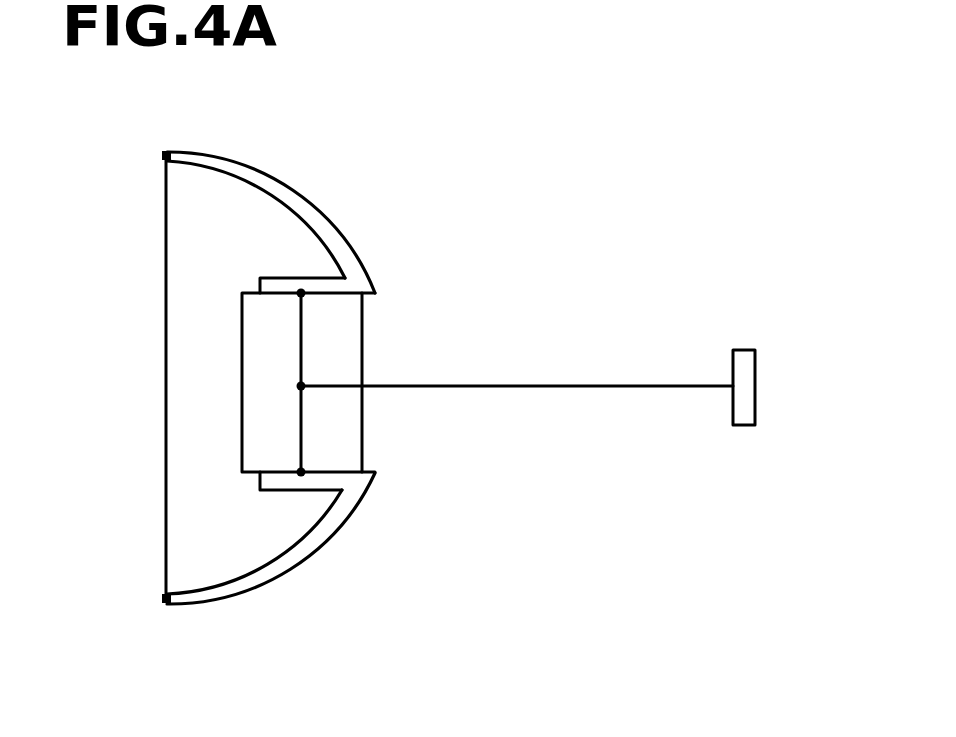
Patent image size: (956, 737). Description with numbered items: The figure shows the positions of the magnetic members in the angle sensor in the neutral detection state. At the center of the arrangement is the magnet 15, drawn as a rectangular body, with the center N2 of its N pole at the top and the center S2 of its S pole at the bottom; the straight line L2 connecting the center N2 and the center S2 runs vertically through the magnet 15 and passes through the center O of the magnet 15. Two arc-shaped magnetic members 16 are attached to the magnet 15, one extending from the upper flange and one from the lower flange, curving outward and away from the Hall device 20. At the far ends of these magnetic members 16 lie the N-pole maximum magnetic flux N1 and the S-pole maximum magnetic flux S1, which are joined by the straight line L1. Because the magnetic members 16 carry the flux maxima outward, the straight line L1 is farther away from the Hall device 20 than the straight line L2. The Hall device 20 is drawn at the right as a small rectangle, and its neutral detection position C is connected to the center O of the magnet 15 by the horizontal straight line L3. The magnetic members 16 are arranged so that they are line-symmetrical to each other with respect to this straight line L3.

The magnet 15 is at (363, 340).
The magnetic members 16 is at (333, 226).
The Hall device 20 is at (755, 362).
The N-pole maximum magnetic flux N1 is at (160, 157).
The center of the N pole N2 is at (299, 288).
The S-pole maximum magnetic flux S1 is at (160, 600).
The center of the S pole S2 is at (300, 478).
The center of the magnet O is at (300, 386).
The neutral detection position C is at (689, 384).
The straight line connecting N1 and S1 L1 is at (139, 376).
The straight line connecting N2 and S2 L2 is at (276, 382).
The straight line connecting C and O L3 is at (517, 355).